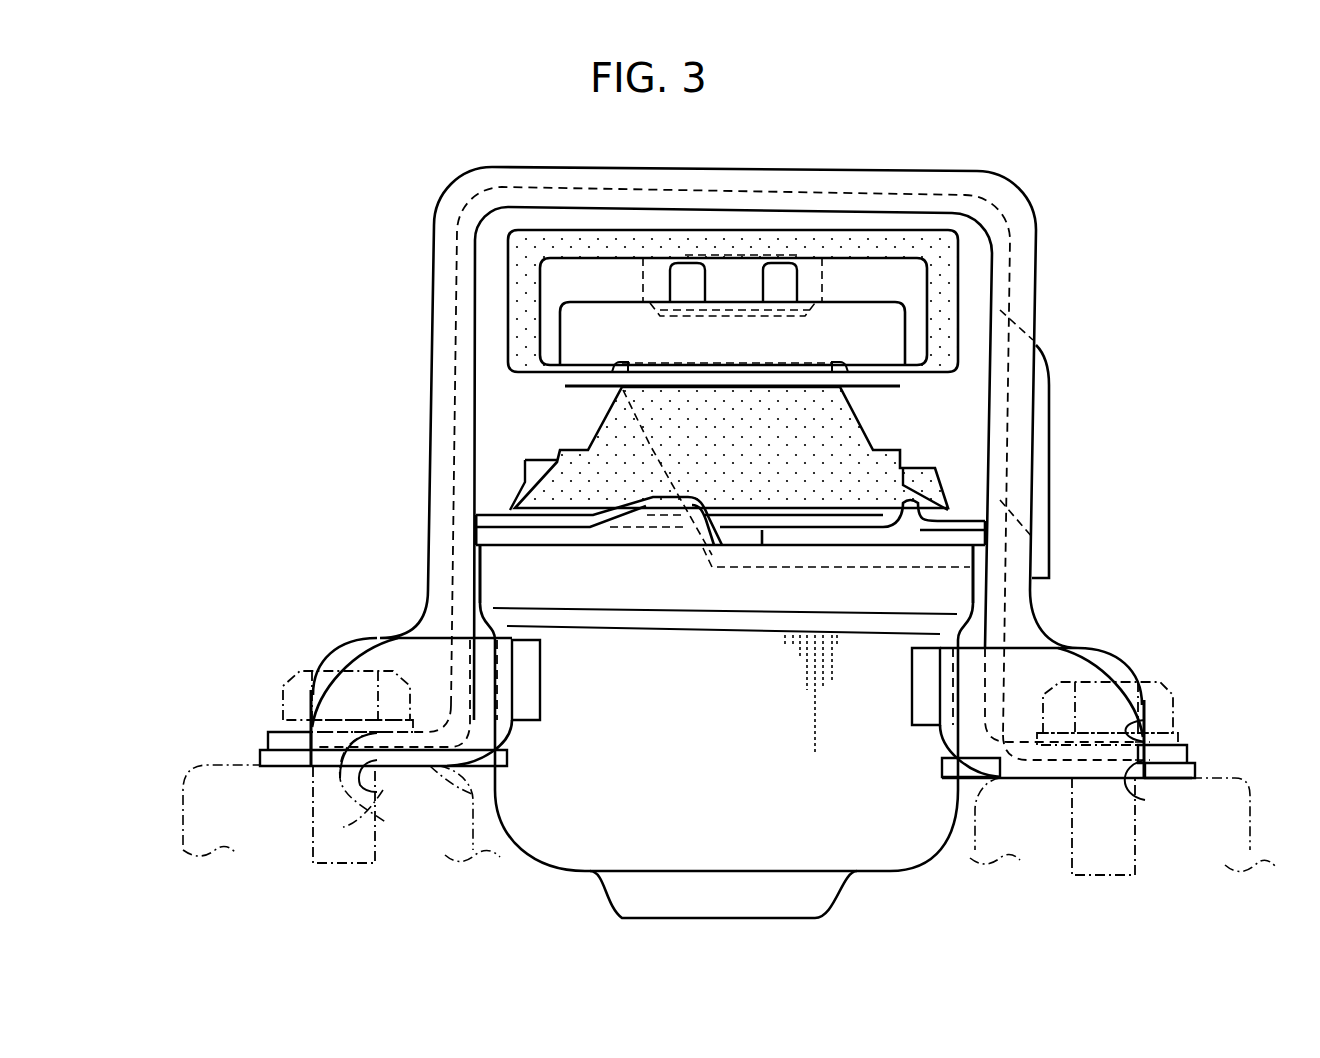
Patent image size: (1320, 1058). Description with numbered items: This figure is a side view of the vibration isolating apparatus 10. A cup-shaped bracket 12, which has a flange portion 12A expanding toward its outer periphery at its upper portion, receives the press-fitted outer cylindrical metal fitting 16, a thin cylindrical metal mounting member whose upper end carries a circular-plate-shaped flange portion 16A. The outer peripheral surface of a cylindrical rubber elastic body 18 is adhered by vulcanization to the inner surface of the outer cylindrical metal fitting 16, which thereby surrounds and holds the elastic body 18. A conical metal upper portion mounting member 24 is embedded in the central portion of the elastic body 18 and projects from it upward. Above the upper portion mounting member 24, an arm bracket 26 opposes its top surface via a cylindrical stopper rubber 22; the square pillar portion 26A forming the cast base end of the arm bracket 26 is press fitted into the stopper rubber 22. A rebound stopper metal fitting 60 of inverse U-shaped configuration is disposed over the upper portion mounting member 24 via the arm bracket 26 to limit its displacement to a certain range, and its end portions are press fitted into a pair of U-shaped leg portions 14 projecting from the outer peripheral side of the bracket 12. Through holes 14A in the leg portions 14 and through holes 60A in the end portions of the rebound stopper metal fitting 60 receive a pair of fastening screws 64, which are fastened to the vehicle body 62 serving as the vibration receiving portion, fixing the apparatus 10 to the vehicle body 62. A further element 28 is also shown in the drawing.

The vibration isolating apparatus 10 is at (1178, 320).
The bracket 12 is at (895, 840).
The flange portion 12A is at (520, 535).
The leg portions 14 is at (402, 650).
The through holes 14A is at (368, 778).
The outer cylindrical metal fitting 16 is at (966, 512).
The flange portion 16A is at (483, 508).
The rubber elastic body 18 is at (612, 420).
The stopper rubber 22 is at (893, 235).
The upper portion mounting member 24 is at (806, 362).
The arm bracket 26 is at (1048, 410).
The square pillar portion 26A is at (905, 288).
The stopper projection 28 is at (790, 240).
The rebound stopper metal fitting 60 is at (708, 172).
The through holes 60A is at (352, 805).
The vehicle body 62 is at (193, 765).
The fastening screws 64 is at (300, 672).